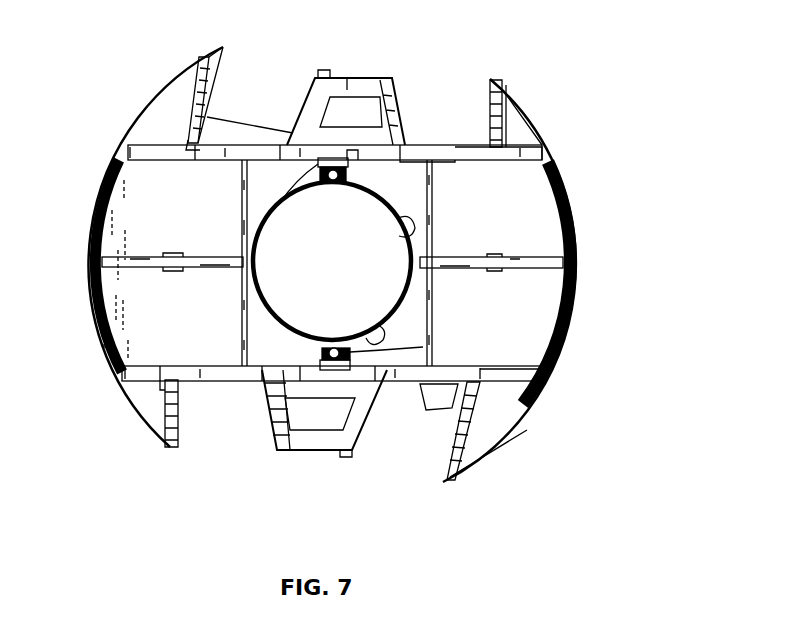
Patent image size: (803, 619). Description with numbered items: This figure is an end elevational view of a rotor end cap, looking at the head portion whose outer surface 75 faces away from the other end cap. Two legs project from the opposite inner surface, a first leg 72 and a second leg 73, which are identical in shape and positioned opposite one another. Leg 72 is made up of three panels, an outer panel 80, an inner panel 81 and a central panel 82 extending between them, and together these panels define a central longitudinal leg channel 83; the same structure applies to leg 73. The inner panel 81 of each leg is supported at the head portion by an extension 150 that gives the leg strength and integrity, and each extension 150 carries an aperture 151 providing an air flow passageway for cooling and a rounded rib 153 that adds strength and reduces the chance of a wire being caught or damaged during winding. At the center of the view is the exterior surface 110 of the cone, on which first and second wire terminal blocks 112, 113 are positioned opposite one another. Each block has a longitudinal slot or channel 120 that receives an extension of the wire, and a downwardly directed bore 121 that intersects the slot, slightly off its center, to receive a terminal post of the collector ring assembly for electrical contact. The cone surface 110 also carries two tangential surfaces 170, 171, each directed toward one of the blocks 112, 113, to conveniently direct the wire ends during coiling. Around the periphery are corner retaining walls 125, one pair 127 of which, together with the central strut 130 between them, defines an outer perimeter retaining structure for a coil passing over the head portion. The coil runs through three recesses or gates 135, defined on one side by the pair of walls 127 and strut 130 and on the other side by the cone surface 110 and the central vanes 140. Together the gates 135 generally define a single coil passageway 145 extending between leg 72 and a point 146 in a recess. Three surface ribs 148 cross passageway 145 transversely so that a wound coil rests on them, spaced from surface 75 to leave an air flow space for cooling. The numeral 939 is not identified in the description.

The second leg 73 is at (223, 113).
The extension 150 is at (337, 77).
The aperture 151 is at (372, 97).
The second wire terminal block 113 is at (320, 145).
The beam portion 939 is at (420, 147).
The point 146 is at (450, 145).
The recesses or gates 135 is at (467, 145).
The retaining walls 125 is at (503, 93).
The second pair of retaining walls 127 is at (500, 130).
The surface ribs 148 is at (472, 155).
The outer surface 75 is at (133, 217).
The tangential surface 171 is at (250, 200).
The channel 120 is at (318, 168).
The bore 121 is at (330, 187).
The exterior surface of cone 110 is at (403, 222).
The central vanes 140 is at (382, 160).
The central strut 130 is at (577, 233).
The coil passageway 145 is at (500, 370).
The first wire terminal block 112 is at (318, 358).
The tangential surface 170 is at (380, 325).
The rounded rib 153 is at (278, 450).
The inner panel 81 is at (347, 457).
The central panel 82 is at (430, 410).
The central longitudinal leg channel 83 is at (440, 407).
The first leg 72 is at (447, 470).
The outer panel 80 is at (463, 473).